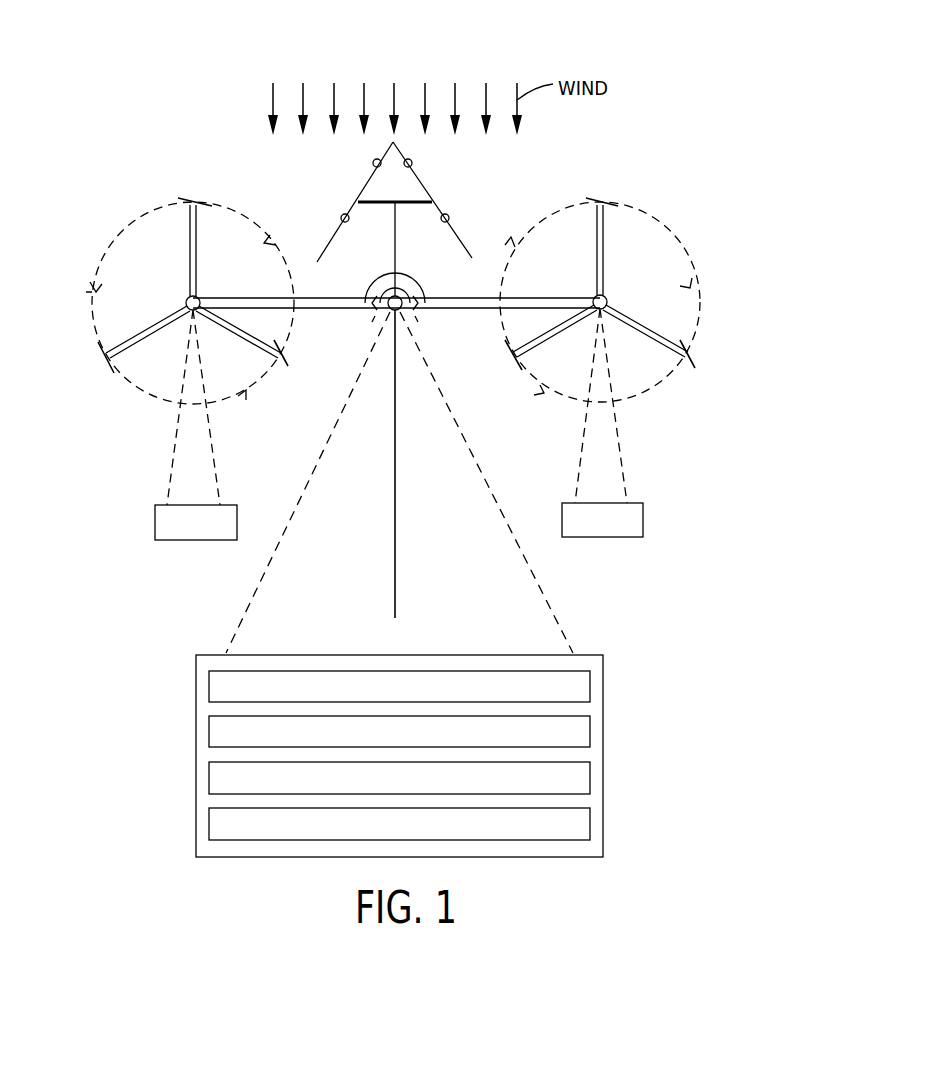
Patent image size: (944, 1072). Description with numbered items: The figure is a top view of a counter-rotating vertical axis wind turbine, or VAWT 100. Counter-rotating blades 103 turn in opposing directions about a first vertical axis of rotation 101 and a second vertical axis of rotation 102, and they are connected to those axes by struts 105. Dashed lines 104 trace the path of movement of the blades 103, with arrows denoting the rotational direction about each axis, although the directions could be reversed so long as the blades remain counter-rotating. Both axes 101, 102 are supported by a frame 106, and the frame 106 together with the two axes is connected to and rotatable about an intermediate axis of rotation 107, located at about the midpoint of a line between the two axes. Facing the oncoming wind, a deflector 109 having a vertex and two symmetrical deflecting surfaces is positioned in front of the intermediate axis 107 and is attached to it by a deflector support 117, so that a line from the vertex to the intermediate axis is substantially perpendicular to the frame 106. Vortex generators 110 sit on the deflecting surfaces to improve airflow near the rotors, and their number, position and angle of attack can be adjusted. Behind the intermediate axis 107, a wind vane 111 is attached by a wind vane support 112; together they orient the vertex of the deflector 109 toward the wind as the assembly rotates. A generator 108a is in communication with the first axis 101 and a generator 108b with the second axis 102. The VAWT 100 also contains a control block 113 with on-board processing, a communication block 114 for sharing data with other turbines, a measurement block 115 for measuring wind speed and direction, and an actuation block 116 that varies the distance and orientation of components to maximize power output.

The VAWT 100 is at (150, 80).
The first vertical axis of rotation 101 is at (185, 298).
The second vertical axis of rotation 102 is at (608, 294).
The counter-rotating blades 103 is at (108, 357).
The path of movement 104 is at (133, 392).
The struts 105 is at (130, 332).
The frame 106 is at (335, 310).
The intermediate axis of rotation 107 is at (425, 305).
The generator 108a is at (193, 541).
The generator 108b is at (604, 538).
The deflector 109 is at (428, 190).
The vortex generators 110 is at (373, 162).
The wind vane 111 is at (396, 573).
The wind vane support 112 is at (396, 388).
The control block 113 is at (577, 685).
The communication block 114 is at (577, 731).
The measurement block 115 is at (577, 778).
The actuation block 116 is at (577, 825).
The deflector support 117 is at (393, 238).